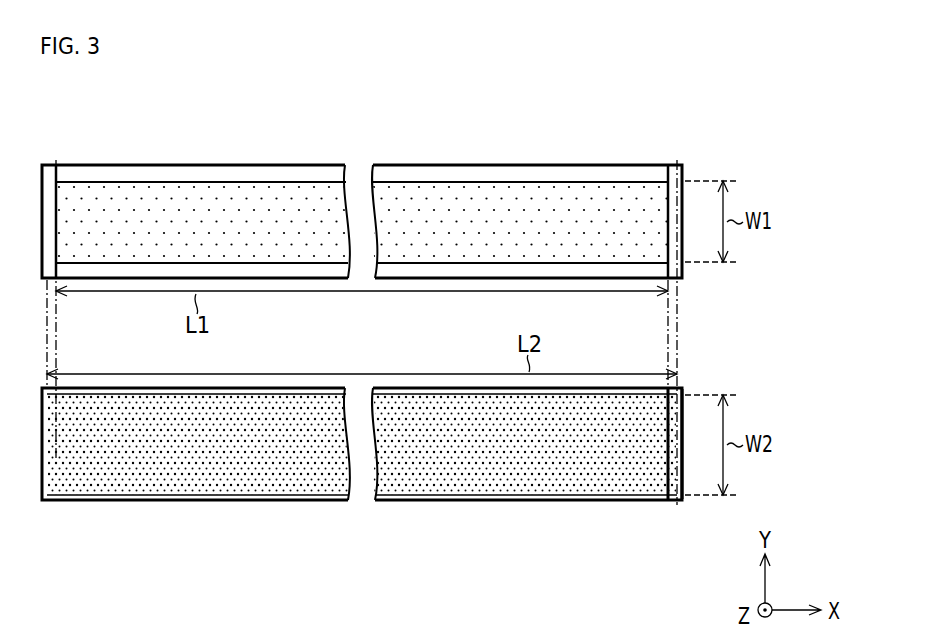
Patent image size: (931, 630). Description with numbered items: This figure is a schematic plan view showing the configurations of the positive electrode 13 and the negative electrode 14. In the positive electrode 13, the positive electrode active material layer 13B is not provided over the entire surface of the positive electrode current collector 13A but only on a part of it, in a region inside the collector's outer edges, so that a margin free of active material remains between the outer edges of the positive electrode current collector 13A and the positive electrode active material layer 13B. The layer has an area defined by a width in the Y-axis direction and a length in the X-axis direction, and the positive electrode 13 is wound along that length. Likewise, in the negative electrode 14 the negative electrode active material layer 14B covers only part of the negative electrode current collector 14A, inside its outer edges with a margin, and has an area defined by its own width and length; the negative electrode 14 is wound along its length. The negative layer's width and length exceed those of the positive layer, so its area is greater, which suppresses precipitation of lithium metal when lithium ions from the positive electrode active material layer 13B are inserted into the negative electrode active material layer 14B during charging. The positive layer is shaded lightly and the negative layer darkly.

The positive electrode 13 is at (362, 169).
The positive electrode current collector 13A is at (153, 172).
The positive electrode active material layer 13B is at (115, 108).
The negative electrode 14 is at (362, 499).
The negative electrode current collector 14A is at (487, 498).
The negative electrode active material layer 14B is at (450, 560).